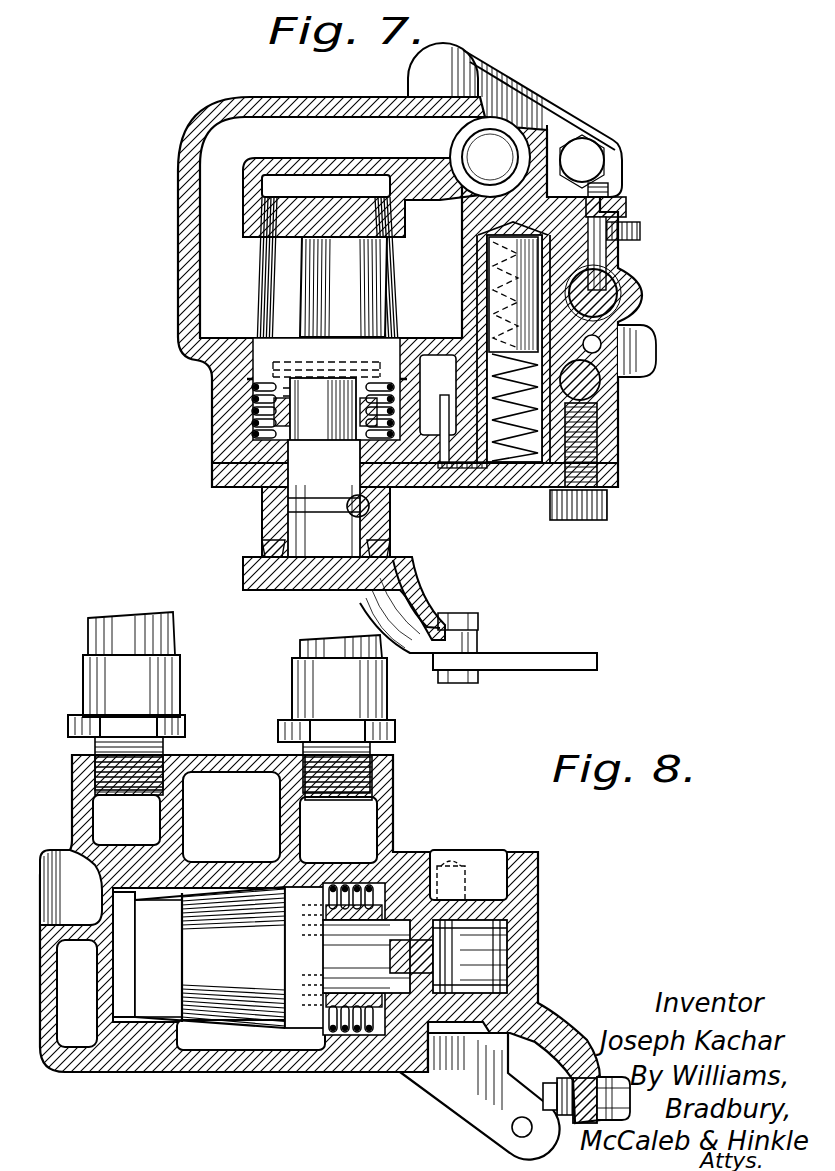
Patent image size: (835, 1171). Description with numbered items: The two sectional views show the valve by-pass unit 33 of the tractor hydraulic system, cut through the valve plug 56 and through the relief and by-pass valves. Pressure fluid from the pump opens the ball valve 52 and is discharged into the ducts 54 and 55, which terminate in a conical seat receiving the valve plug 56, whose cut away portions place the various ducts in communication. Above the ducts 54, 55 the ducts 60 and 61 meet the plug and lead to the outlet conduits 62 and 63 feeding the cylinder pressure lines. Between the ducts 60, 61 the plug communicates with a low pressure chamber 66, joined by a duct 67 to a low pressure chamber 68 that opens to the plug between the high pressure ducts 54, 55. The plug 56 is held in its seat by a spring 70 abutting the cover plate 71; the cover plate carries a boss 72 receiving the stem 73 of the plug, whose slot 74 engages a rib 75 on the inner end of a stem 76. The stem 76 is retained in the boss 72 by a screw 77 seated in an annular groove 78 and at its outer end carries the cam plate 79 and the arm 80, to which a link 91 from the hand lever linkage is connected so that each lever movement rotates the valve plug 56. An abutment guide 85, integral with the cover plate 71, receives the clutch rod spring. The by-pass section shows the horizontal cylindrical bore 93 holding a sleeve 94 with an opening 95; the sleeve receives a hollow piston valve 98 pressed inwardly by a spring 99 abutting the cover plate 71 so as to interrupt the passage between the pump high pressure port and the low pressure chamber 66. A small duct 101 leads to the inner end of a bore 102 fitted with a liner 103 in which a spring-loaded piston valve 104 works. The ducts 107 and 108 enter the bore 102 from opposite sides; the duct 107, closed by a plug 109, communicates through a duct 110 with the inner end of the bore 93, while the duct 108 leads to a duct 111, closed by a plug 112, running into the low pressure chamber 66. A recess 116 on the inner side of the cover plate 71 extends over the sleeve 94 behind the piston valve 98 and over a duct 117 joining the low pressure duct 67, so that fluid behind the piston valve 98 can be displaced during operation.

In FIG. 7, the valve by-pass unit 33 is at (168, 296).
In FIG. 8, the valve by-pass unit 33 is at (170, 1072).
In FIG. 7, the ball valve 52 is at (495, 150).
In FIG. 7, the duct 54 is at (371, 287).
In FIG. 7, the duct 55 is at (315, 132).
In FIG. 7, the valve plug 56 is at (290, 212).
In FIG. 8, the valve plug 56 is at (150, 985).
In FIG. 8, the duct 60 is at (355, 830).
In FIG. 8, the duct 61 is at (118, 814).
In FIG. 8, the outlet conduit 62 is at (380, 704).
In FIG. 8, the outlet conduit 63 is at (152, 692).
In FIG. 8, the low pressure chamber 66 is at (228, 792).
In FIG. 7, the duct 67 is at (438, 395).
In FIG. 8, the low pressure chamber 68 is at (233, 1045).
In FIG. 7, the spring 70 is at (265, 392).
In FIG. 8, the spring 70 is at (335, 1038).
In FIG. 7, the cover plate 71 is at (232, 474).
In FIG. 8, the cover plate 71 is at (395, 1072).
In FIG. 7, the boss 72 is at (392, 528).
In FIG. 8, the boss 72 is at (482, 882).
In FIG. 7, the stem 73 is at (292, 420).
In FIG. 8, the stem 73 is at (330, 949).
In FIG. 7, the slot 74 is at (312, 446).
In FIG. 8, the slot 74 is at (378, 956).
In FIG. 7, the rib 75 is at (292, 494).
In FIG. 8, the rib 75 is at (510, 944).
In FIG. 7, the stem 76 is at (262, 548).
In FIG. 8, the stem 76 is at (522, 966).
In FIG. 7, the screw 77 is at (372, 498).
In FIG. 8, the screw 77 is at (448, 864).
In FIG. 7, the annular groove 78 is at (300, 522).
In FIG. 8, the annular groove 78 is at (532, 915).
In FIG. 7, the plate 79 is at (300, 582).
In FIG. 8, the plate 79 is at (540, 886).
In FIG. 7, the arm 80 is at (400, 620).
In FIG. 8, the abutment guide 85 is at (468, 1128).
In FIG. 7, the link 91 is at (560, 655).
In FIG. 8, the link 91 is at (585, 1088).
In FIG. 7, the cylindrical bore 93 is at (598, 404).
In FIG. 7, the sleeve 94 is at (580, 440).
In FIG. 7, the opening 95 is at (488, 325).
In FIG. 7, the hollow piston valve 98 is at (488, 295).
In FIG. 7, the spring 99 is at (520, 470).
In FIG. 7, the small duct 101 is at (606, 263).
In FIG. 7, the bore 102 is at (618, 288).
In FIG. 7, the liner 103 is at (622, 306).
In FIG. 7, the piston valve 104 is at (602, 338).
In FIG. 7, the duct 107 is at (642, 242).
In FIG. 7, the duct 108 is at (658, 350).
In FIG. 7, the plug 109 is at (610, 200).
In FIG. 7, the duct 110 is at (628, 217).
In FIG. 7, the duct 111 is at (618, 378).
In FIG. 7, the plug 112 is at (600, 343).
In FIG. 7, the recess 116 is at (470, 470).
In FIG. 7, the duct 117 is at (443, 440).